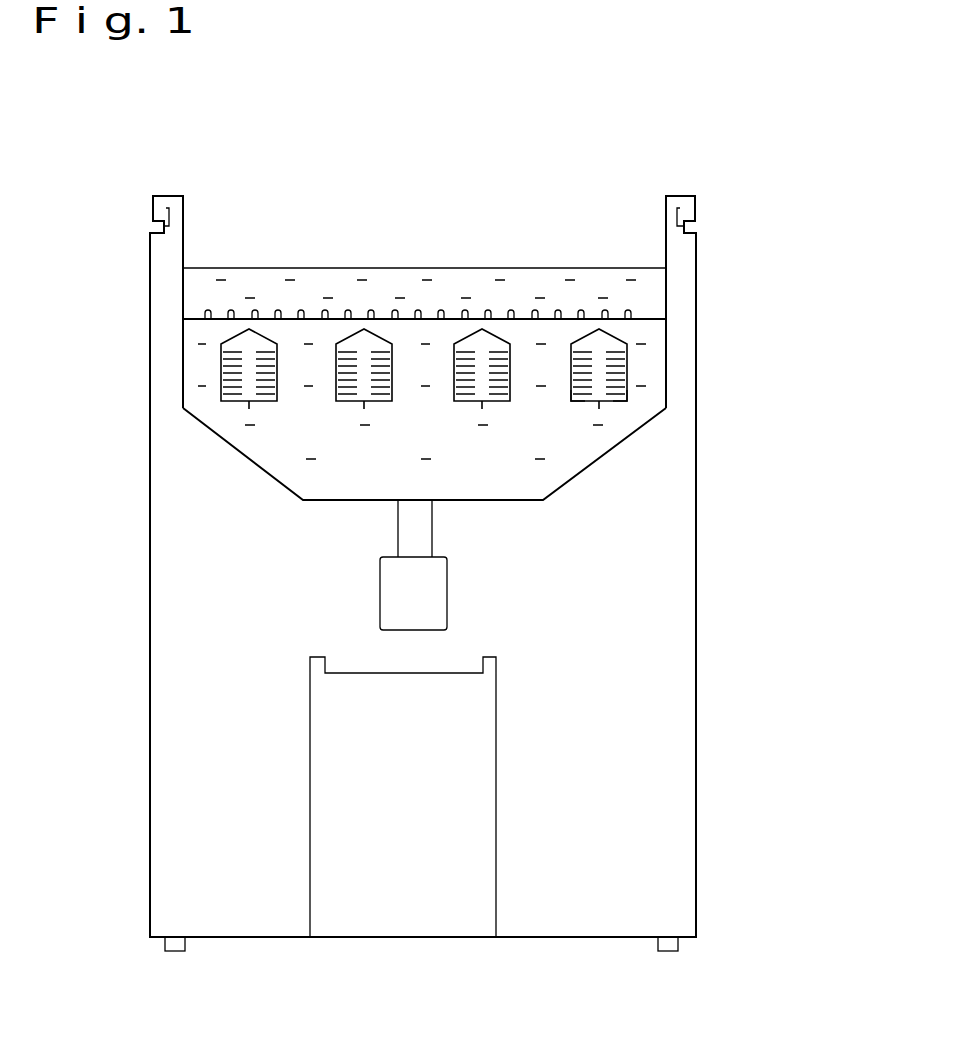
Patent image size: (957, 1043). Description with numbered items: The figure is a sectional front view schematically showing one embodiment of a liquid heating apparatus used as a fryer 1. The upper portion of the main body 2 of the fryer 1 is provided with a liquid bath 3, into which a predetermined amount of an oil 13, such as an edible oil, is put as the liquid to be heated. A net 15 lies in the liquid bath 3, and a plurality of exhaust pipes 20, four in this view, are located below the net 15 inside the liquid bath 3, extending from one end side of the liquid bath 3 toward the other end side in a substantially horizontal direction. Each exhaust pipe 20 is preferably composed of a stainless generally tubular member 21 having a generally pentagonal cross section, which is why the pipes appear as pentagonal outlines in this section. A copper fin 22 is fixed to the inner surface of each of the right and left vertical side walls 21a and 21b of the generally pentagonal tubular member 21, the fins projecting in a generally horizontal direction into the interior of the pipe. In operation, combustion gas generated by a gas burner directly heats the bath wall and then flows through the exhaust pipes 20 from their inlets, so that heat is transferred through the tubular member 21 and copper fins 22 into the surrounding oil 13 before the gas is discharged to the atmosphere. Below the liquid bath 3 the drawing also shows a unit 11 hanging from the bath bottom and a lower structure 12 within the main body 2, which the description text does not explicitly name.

The fryer 1 is at (739, 215).
The main body 2 is at (697, 673).
The liquid bath 3 is at (220, 440).
The drive unit 11 is at (385, 590).
The lower frame 12 is at (413, 937).
The oil 13 is at (290, 283).
The net 15 is at (422, 315).
The exhaust pipe 20 is at (219, 372).
The generally tubular member 21 is at (240, 336).
The vertical side wall 21a is at (578, 405).
The vertical side wall 21b is at (617, 405).
The copper fin 22 is at (355, 352).